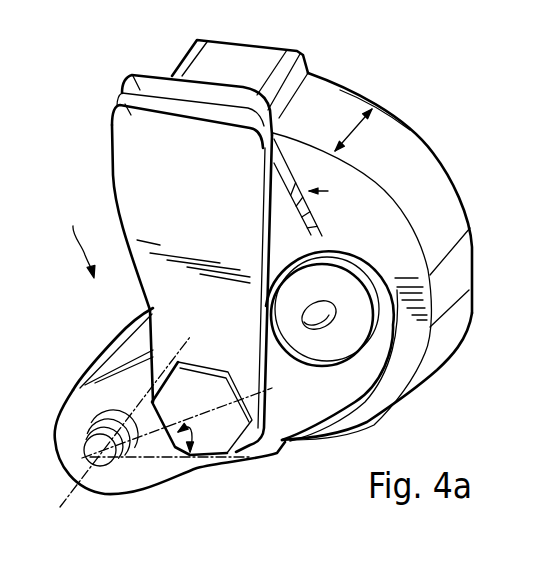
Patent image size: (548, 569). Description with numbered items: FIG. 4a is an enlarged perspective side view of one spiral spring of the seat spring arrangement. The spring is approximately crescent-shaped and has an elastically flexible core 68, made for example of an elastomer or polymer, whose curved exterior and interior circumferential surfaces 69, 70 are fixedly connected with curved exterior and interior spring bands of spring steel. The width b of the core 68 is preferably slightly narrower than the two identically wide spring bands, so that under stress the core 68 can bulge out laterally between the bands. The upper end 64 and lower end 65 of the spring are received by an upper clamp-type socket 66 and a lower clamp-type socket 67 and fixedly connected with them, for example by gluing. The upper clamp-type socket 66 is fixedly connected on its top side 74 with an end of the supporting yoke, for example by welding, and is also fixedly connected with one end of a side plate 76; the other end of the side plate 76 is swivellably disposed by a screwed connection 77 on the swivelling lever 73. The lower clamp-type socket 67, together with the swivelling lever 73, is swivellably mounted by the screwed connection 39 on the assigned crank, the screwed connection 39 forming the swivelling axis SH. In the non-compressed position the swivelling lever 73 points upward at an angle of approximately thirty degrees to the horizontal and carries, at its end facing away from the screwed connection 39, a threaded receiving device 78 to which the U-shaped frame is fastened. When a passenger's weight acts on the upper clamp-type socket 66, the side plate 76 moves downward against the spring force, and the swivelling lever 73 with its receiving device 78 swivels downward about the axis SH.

The screwed connection 39 is at (84, 452).
The upper end 64 is at (348, 73).
The lower end 65 is at (74, 238).
The upper clamp-type socket 66 is at (179, 74).
The lower clamp-type socket 67 is at (110, 340).
The elastically flexible core 68 is at (308, 187).
The exterior circumferential surface 69 is at (312, 220).
The interior circumferential surface 70 is at (396, 207).
The swivelling lever 73 is at (151, 476).
The top side 74 is at (237, 73).
The side plate 76 is at (171, 193).
The screwed connection 77 is at (213, 388).
The receiving device 78 is at (325, 358).
The swivelling axis SH is at (78, 511).
The width b is at (353, 130).